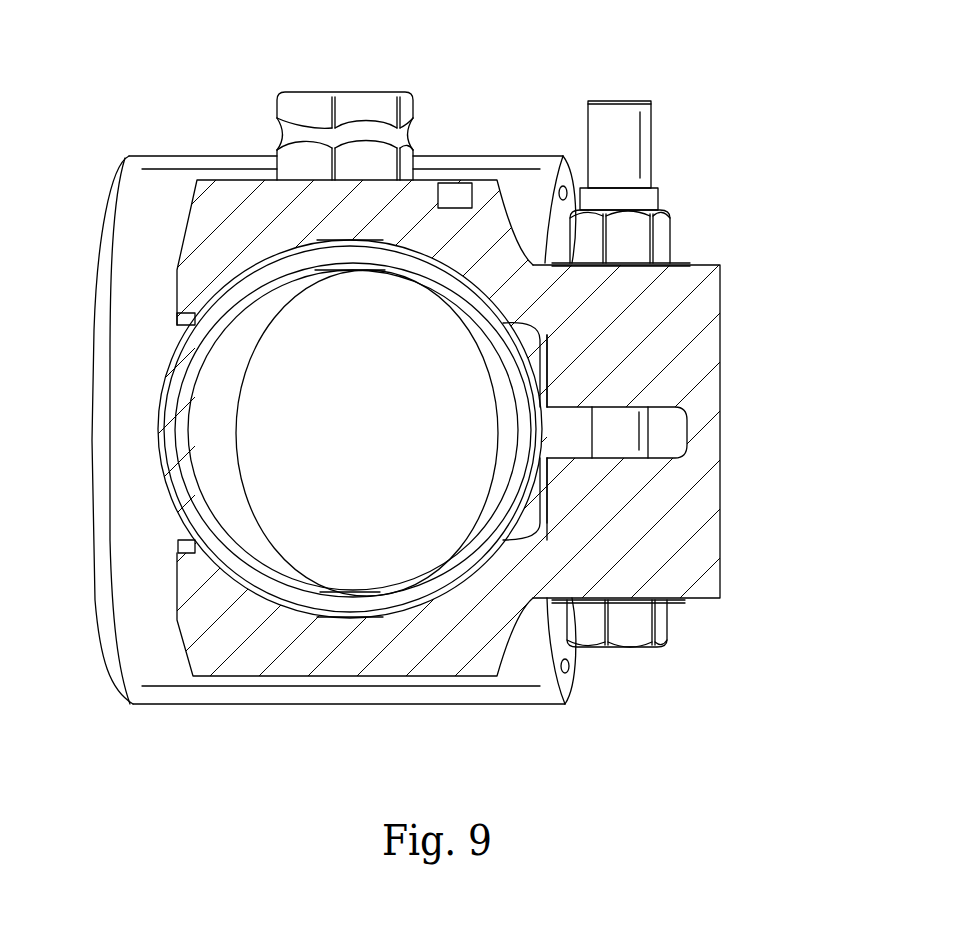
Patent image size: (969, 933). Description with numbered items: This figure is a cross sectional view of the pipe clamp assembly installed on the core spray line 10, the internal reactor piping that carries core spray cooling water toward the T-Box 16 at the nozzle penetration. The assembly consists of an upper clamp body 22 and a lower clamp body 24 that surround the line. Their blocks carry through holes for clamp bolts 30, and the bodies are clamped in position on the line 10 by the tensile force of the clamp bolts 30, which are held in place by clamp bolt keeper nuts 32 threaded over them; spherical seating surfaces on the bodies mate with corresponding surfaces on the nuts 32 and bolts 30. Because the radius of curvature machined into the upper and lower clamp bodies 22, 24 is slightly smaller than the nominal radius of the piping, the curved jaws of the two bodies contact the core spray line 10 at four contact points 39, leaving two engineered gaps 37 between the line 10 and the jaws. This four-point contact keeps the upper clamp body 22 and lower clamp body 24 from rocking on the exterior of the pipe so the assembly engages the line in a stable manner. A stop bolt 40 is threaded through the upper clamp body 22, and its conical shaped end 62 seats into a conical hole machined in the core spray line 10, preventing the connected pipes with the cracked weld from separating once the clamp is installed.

The core spray line 10 is at (235, 300).
The T-Box 16 is at (330, 705).
The upper clamp body 22 is at (720, 325).
The lower clamp body 24 is at (722, 527).
The clamp bolt 30 is at (633, 635).
The clamp bolt keeper nut 32 is at (645, 240).
The engineered gap 37 is at (340, 243).
The contact point 39 is at (180, 553).
The stop bolt 40 is at (365, 112).
The conical shaped end 62 is at (348, 270).